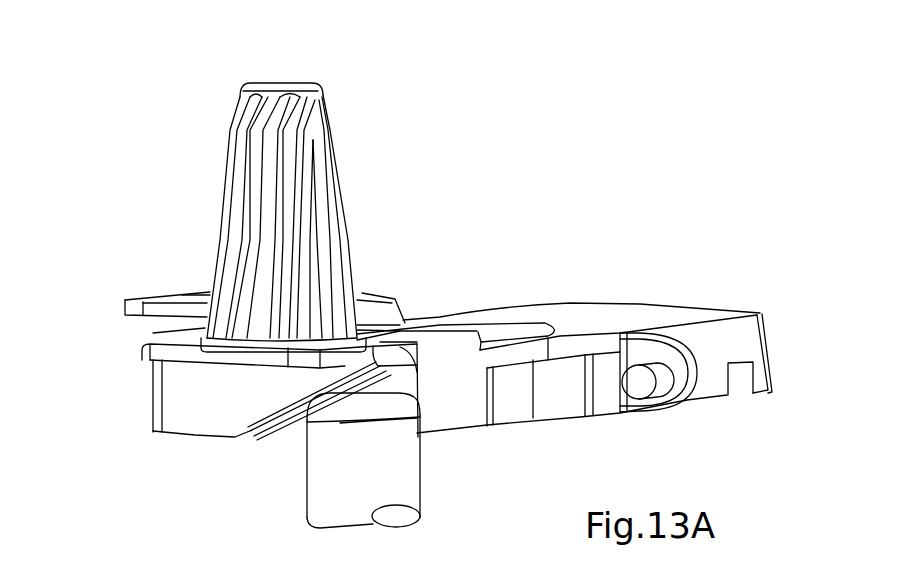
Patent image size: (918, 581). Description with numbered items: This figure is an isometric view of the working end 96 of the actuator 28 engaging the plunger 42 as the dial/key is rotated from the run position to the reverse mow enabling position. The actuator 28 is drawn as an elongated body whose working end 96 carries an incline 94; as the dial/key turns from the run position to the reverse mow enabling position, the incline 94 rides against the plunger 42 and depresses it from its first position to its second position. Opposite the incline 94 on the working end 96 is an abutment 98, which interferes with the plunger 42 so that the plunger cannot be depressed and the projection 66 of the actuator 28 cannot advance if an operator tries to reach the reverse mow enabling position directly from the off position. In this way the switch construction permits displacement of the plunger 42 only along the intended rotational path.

The projection 66 is at (283, 82).
The actuator 28 is at (520, 315).
The abutment 98 is at (152, 397).
The working end 96 is at (207, 410).
The incline 94 is at (278, 432).
The plunger 42 is at (410, 448).